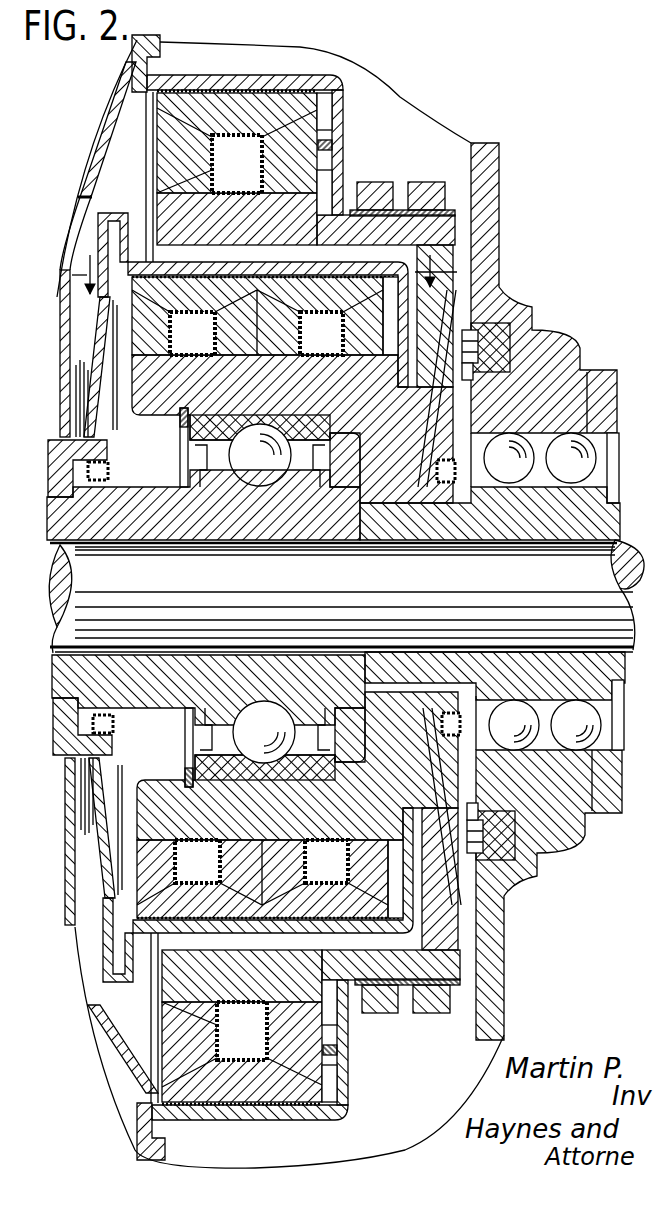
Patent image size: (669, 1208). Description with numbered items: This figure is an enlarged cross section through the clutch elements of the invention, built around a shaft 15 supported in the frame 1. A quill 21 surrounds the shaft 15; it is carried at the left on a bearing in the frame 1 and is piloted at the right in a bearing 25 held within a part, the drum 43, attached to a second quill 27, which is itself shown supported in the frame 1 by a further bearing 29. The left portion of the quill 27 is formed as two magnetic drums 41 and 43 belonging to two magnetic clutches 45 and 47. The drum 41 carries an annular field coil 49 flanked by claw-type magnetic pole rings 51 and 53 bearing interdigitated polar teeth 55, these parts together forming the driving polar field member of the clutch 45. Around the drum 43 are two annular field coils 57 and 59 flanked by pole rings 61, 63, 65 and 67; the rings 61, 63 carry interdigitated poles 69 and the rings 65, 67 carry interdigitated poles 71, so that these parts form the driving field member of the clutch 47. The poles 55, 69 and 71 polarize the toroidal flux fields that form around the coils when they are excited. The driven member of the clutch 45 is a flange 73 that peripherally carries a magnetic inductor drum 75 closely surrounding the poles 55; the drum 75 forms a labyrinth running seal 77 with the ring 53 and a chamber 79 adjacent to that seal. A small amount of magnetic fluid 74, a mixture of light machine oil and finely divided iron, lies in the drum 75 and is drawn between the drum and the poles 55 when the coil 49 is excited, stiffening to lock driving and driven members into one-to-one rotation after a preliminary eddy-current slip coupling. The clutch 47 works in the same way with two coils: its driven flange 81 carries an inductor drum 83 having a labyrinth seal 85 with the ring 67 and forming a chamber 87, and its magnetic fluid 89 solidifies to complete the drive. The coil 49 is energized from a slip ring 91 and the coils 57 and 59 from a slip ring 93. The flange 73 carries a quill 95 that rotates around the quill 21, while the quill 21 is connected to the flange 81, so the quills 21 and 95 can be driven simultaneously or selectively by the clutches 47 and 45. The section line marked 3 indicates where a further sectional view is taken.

The frame 1 is at (494, 178).
The section line 3- 3 is at (264, 273).
The shaft 15 is at (612, 598).
The quill 21 is at (137, 525).
The bearing 25 is at (259, 488).
The quill 27 is at (550, 530).
The ball bearing 29 is at (590, 458).
The magnetic drum 41 is at (165, 217).
The magnetic drum 43 is at (165, 403).
The magnetic clutch 45 is at (147, 136).
The magnetic clutch 47 is at (138, 257).
The annular field coil 49 is at (237, 164).
The magnetic pole ring 51 is at (165, 167).
The magnetic pole ring 53 is at (273, 140).
The interdigitated polar teeth 55 is at (188, 103).
The annular field coil 57 is at (192, 333).
The annular field coil 59 is at (321, 333).
The magnetic pole ring 61 is at (140, 336).
The magnetic pole ring 63 is at (185, 412).
The magnetic pole ring 65 is at (345, 460).
The magnetic pole ring 67 is at (428, 345).
The interdigitated poles 69 is at (148, 283).
The interdigitated poles 71 is at (327, 258).
The flange 73 is at (100, 156).
The magnetic fluid 74 is at (213, 88).
The magnetic inductor drum 75 is at (250, 80).
The labyrinth running seal 77 is at (340, 145).
The chamber 79 is at (323, 107).
The driven flange 81 is at (70, 330).
The inductor drum 83 is at (197, 261).
The labyrinth seal 85 is at (500, 307).
The chamber 87 is at (420, 247).
The magnetic fluid 89 is at (386, 282).
The slip ring 91 is at (378, 182).
The slip ring 93 is at (433, 182).
The quill 95 is at (57, 462).